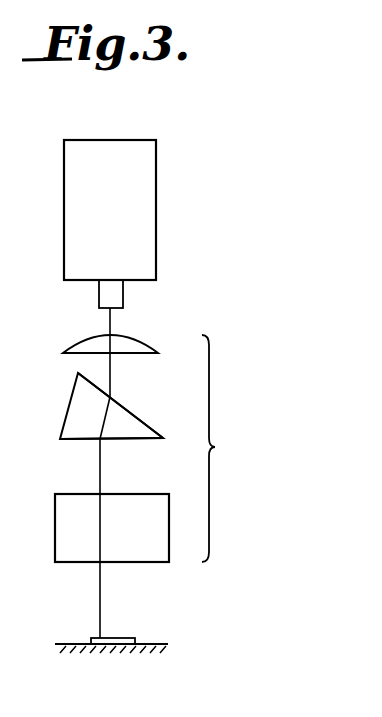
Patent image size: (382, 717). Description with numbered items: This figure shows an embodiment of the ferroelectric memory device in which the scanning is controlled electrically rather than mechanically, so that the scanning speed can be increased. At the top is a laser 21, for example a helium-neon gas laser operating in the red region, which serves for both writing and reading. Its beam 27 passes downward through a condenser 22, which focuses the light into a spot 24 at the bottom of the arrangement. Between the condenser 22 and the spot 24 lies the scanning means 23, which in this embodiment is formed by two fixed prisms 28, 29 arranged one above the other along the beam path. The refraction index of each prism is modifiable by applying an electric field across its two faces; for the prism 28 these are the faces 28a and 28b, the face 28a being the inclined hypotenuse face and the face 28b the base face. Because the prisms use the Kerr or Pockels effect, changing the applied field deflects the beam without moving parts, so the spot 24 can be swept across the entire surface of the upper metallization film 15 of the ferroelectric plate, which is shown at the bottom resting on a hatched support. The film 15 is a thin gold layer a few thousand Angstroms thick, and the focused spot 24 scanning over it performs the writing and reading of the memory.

The laser 21 is at (112, 214).
The light beam / optical axis 27 is at (109, 323).
The condenser 22 is at (137, 348).
The fixed prism 28 is at (78, 407).
The prism face 28a is at (121, 404).
The prism face 28b is at (128, 440).
The fixed prism 29 is at (68, 522).
The scanning means 23 is at (226, 448).
The spot 24 is at (95, 637).
The upper metallization film 15 is at (123, 637).